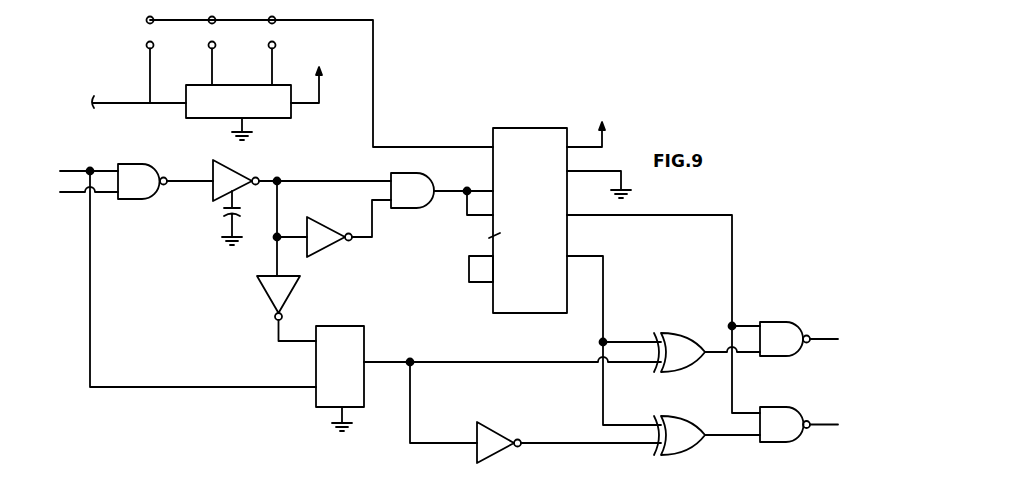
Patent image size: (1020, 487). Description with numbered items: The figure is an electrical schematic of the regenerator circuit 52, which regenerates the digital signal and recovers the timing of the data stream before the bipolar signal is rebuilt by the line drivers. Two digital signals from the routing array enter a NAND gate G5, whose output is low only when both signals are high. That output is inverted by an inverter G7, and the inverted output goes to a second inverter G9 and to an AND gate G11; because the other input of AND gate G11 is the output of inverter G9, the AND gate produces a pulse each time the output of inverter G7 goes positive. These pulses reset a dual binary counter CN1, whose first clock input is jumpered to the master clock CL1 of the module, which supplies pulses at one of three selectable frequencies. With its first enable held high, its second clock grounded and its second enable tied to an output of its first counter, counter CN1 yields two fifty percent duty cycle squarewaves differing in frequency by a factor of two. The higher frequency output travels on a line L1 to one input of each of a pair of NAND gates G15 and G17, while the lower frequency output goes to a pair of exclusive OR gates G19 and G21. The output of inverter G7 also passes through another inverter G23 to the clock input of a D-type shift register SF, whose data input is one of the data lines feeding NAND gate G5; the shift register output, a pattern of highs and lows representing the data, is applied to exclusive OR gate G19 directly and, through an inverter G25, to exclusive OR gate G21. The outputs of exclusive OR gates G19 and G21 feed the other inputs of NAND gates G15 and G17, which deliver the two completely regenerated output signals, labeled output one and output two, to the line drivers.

The master clock CL1 is at (186, 113).
The NAND gate G5 is at (140, 199).
The inverter G7 is at (241, 176).
The second inverter G9 is at (330, 226).
The AND gate G11 is at (420, 173).
The dual binary counter CN1 is at (548, 127).
The line L1 is at (734, 262).
The inverter G23 is at (288, 300).
The D-type shift register SF is at (365, 350).
The regenerator circuit 52 is at (248, 403).
The inverter G25 is at (493, 431).
The exclusive OR gate G19 is at (696, 324).
The exclusive OR gate G21 is at (691, 393).
The NAND gate G15 is at (770, 322).
The NAND gate G17 is at (785, 394).